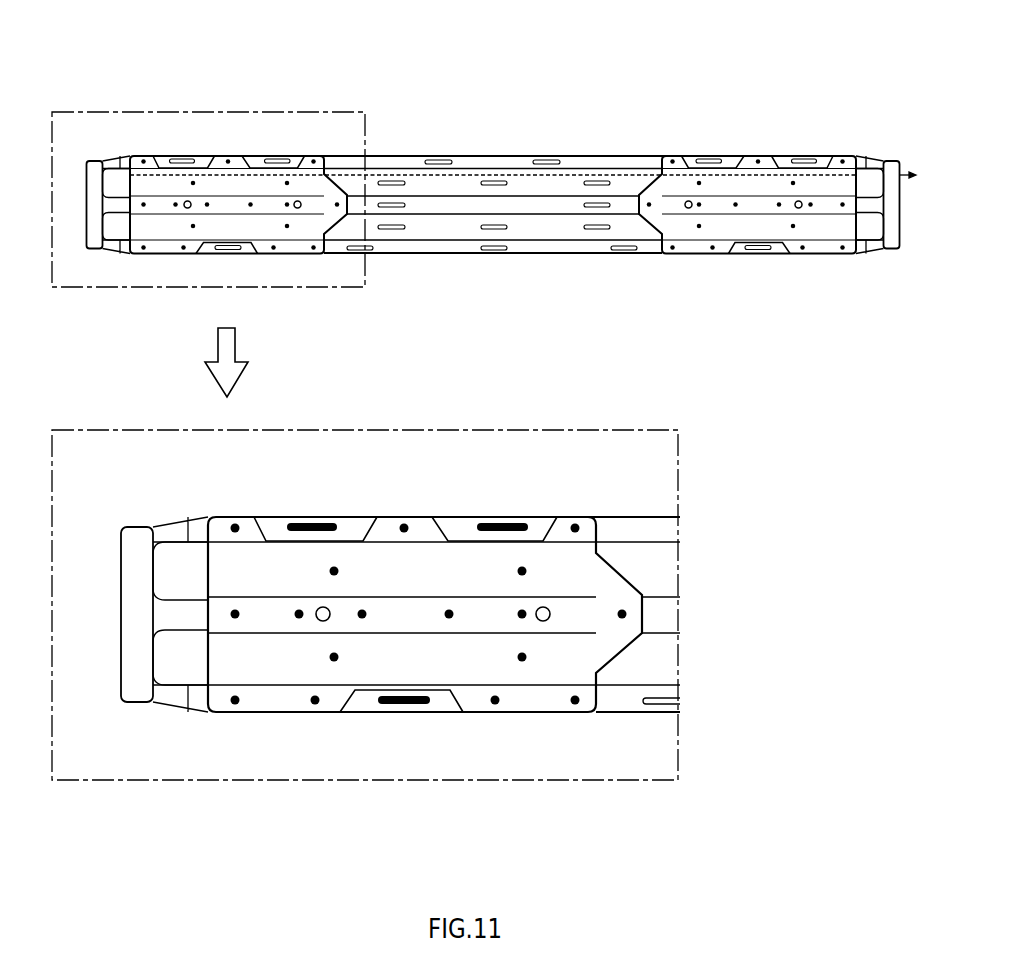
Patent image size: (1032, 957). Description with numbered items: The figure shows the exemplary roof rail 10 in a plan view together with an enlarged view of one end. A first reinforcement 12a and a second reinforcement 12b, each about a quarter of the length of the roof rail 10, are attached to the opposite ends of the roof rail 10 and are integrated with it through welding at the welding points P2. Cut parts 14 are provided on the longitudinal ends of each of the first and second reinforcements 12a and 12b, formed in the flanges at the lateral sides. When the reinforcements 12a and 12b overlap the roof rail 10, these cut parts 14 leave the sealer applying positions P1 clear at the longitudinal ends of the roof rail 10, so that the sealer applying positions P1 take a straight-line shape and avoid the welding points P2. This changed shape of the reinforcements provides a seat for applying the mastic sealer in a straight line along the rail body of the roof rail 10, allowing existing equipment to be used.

The roof rail 10 is at (577, 157).
The first reinforcement 12a is at (365, 440).
The second reinforcement 12b is at (752, 158).
The cut part 14 is at (547, 526).
The sealer applying position P1 is at (407, 704).
The welding point P2 is at (576, 523).